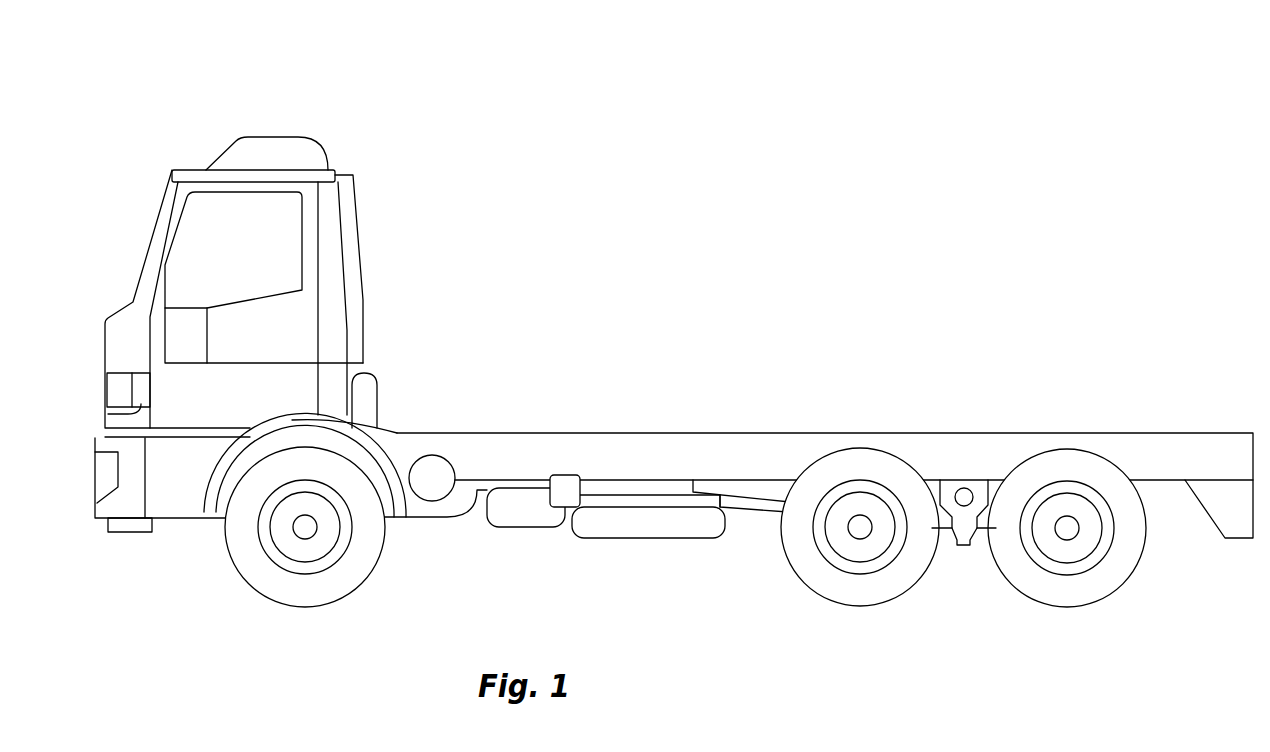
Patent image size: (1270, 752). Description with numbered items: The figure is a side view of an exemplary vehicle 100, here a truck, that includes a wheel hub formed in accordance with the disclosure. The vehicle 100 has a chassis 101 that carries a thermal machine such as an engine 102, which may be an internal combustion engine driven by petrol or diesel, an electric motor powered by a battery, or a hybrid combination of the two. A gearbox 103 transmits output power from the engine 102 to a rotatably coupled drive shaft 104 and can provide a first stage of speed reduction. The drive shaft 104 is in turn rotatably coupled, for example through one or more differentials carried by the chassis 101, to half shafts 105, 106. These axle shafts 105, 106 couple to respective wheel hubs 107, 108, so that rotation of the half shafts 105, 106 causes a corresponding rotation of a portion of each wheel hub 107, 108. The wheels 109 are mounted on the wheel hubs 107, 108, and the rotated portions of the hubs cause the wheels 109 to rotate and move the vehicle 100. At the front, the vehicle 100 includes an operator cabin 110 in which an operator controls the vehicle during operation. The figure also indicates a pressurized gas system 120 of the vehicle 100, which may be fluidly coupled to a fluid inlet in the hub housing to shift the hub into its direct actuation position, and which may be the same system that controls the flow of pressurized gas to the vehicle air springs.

The vehicle 100 is at (634, 362).
The chassis 101 is at (718, 450).
The engine 102 is at (117, 390).
The gearbox 103 is at (110, 421).
The drive shaft 104 is at (757, 503).
The half shaft 105 is at (860, 528).
The half shaft 106 is at (1067, 530).
The wheel hub 107 is at (827, 545).
The wheel hub 108 is at (1097, 553).
The wheels 109 is at (949, 520).
The operator cabin 110 is at (206, 252).
The pressurized gas system 120 is at (565, 475).